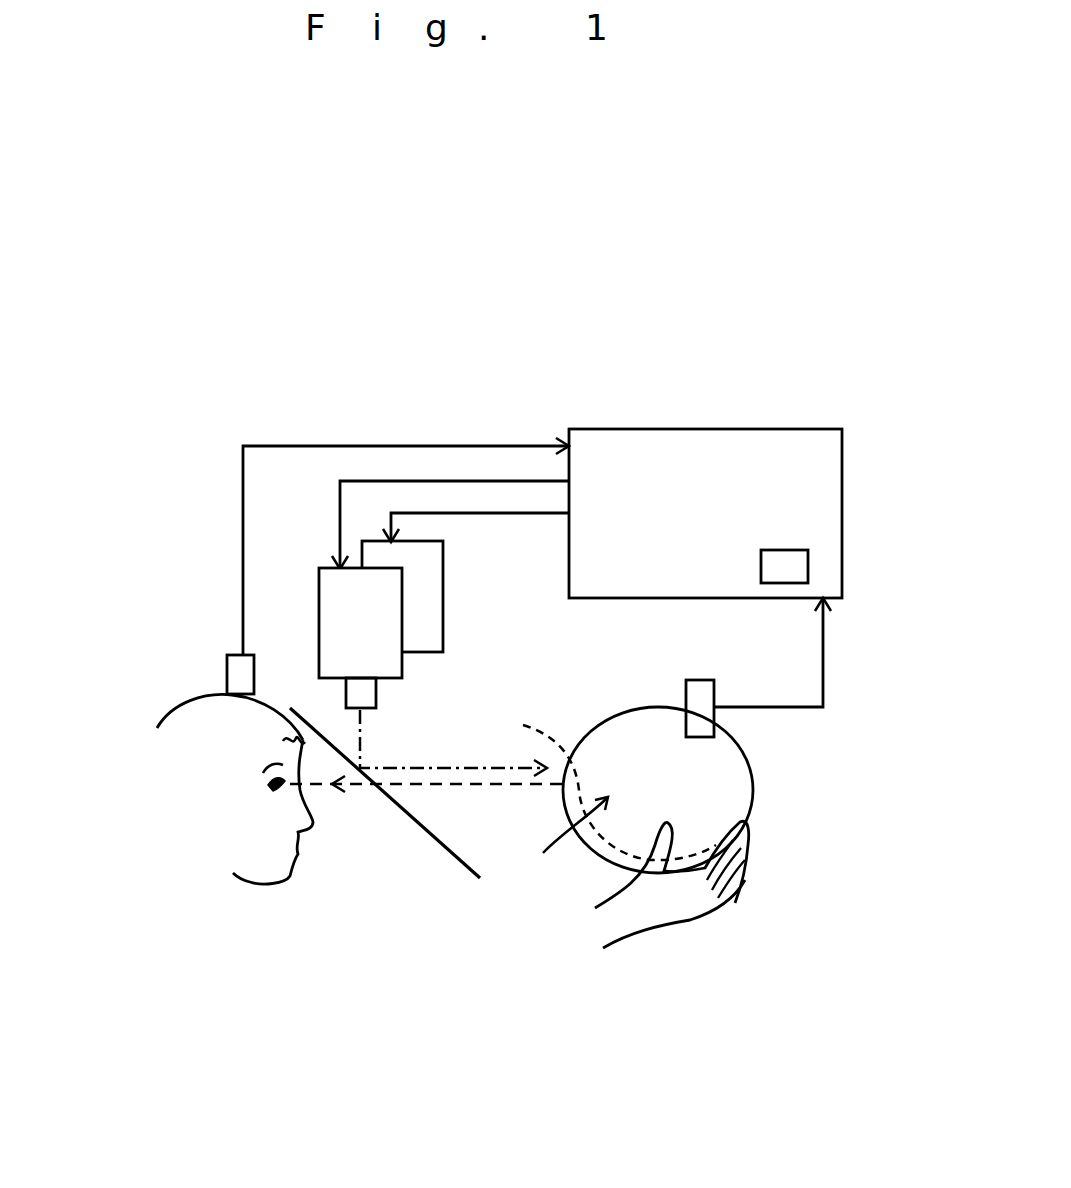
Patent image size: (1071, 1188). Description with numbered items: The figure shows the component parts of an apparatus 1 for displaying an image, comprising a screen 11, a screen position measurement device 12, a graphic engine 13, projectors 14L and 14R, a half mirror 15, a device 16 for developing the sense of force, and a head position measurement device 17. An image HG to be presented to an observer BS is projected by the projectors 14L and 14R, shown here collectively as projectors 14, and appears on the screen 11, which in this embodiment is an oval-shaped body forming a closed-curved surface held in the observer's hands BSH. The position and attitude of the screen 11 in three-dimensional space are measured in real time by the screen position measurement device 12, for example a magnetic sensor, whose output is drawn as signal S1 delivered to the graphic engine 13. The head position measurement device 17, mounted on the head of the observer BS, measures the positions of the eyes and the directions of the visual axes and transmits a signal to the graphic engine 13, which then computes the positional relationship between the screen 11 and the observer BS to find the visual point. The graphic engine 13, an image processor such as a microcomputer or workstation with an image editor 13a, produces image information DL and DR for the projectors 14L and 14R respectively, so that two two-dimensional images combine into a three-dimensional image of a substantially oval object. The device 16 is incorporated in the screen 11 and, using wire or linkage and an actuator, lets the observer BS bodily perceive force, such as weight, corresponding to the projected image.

The apparatus for displaying an image 1 is at (328, 285).
The screen 11 is at (743, 782).
The screen position measurement device 12 is at (690, 692).
The graphic engine 13 is at (812, 445).
The image editor 13a is at (800, 560).
The projectors 14 is at (245, 575).
The projector 14L is at (363, 552).
The projector 14R is at (327, 603).
The half mirror 15 is at (427, 833).
The device for developing the sense of force 16 is at (598, 780).
The head position measurement device 17 is at (227, 665).
The screen position signal S1 is at (823, 662).
The image information DR is at (450, 508).
The image information DL is at (476, 511).
The image HG is at (560, 845).
The observer BS is at (250, 873).
The observer's hands BSH is at (672, 922).